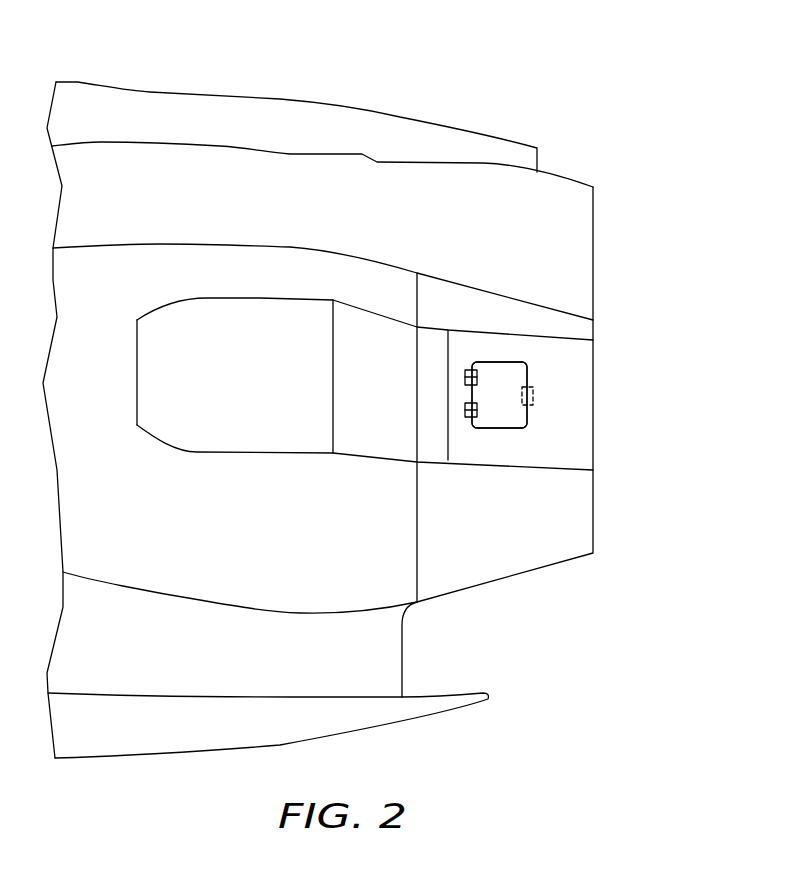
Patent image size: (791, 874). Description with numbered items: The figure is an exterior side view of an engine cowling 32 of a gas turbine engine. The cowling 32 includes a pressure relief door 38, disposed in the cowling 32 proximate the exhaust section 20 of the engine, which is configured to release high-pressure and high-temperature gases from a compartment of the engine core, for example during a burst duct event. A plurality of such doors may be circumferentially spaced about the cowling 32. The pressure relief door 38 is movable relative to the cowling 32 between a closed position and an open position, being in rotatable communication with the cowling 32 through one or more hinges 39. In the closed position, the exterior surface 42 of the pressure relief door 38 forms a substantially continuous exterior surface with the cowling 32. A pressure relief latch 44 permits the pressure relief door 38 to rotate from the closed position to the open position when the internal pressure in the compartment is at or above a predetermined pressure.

The exhaust section 20 is at (567, 288).
The cowling 32 is at (470, 115).
The pressure relief door 38 is at (523, 415).
The hinges 39 is at (464, 375).
The exterior surface 42 is at (498, 413).
The pressure relief latch 44 is at (534, 392).